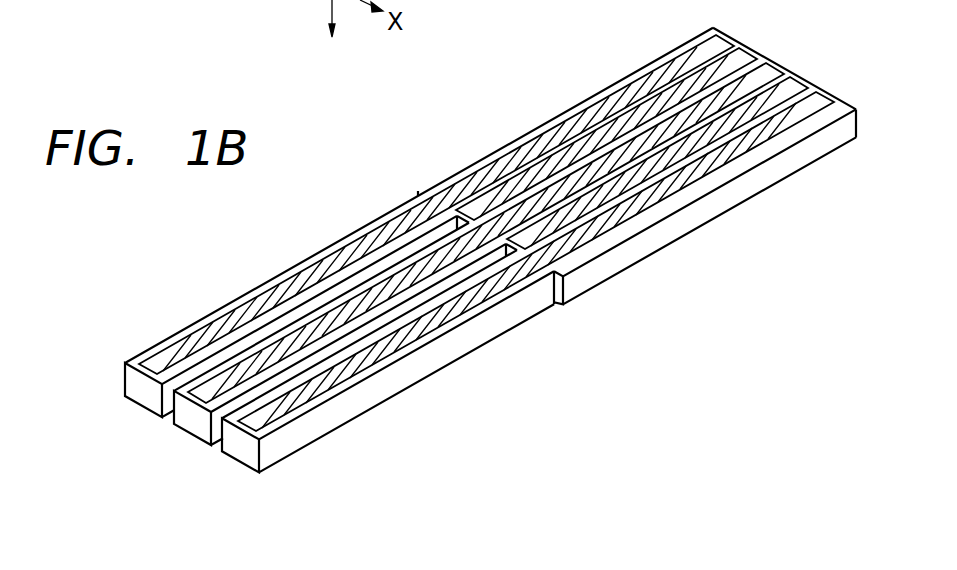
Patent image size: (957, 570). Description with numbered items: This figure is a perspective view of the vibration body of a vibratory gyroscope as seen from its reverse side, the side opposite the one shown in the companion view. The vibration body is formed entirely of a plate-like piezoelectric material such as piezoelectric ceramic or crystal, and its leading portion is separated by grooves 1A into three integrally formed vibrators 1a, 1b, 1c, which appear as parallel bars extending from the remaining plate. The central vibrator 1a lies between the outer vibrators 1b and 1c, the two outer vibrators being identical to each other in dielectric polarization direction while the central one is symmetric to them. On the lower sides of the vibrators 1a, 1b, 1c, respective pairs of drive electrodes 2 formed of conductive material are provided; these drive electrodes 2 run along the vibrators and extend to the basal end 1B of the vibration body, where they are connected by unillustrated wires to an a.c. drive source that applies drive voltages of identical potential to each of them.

The basal end 1B is at (745, 62).
The grooves 1A is at (300, 352).
The central vibrator 1a is at (190, 422).
The vibrator 1b is at (143, 392).
The vibrator 1c is at (240, 448).
The drive electrodes 2 is at (495, 187).